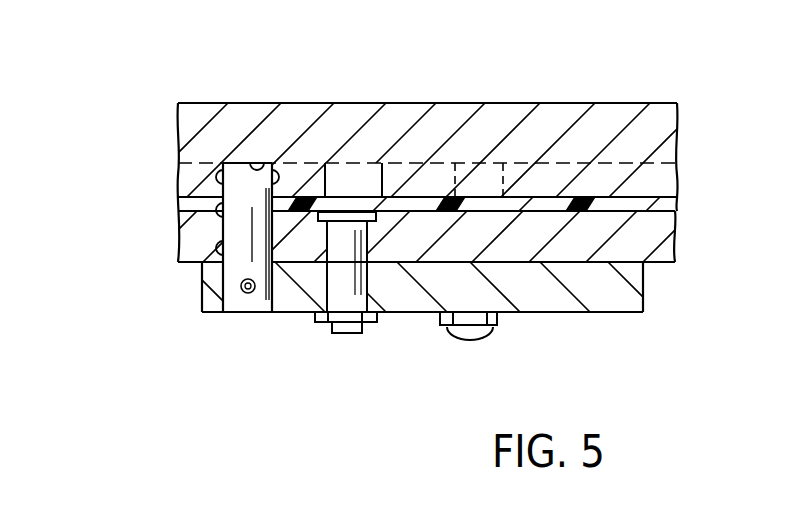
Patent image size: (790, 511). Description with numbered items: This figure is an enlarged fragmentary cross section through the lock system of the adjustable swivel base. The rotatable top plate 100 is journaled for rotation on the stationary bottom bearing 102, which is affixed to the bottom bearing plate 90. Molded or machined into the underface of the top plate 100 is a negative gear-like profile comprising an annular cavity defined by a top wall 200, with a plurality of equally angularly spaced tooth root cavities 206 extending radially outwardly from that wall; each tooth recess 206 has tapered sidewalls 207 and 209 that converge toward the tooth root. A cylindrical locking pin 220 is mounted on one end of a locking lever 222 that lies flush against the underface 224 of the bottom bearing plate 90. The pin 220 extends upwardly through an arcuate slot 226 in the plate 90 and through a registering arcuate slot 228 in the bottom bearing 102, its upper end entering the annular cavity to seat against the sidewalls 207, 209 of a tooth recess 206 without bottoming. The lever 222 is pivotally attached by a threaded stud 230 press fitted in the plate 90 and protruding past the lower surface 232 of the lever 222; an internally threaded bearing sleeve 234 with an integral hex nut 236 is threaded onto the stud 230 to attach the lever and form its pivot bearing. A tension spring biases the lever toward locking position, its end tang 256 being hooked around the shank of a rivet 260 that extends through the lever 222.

The rotatable top plate 100 is at (172, 125).
The bottom bearing 102 is at (172, 199).
The sidewall of tooth recess 209 is at (178, 166).
The tooth root cavity 206 is at (365, 177).
The sidewall of tooth recess 207 is at (330, 163).
The bottom bearing plate 90 is at (170, 241).
The arcuate slot 226 is at (192, 262).
The underface 224 is at (190, 263).
The locking lever 222 is at (286, 323).
The lower surface of lever 232 is at (543, 313).
The locking pin 220 is at (243, 183).
The top wall 200 is at (273, 162).
The arcuate slot 228 is at (180, 219).
The threaded stud 230 is at (349, 345).
The bearing sleeve 234 is at (355, 290).
The hex nut 236 is at (318, 322).
The end tang 256 is at (497, 323).
The rivet 260 is at (482, 335).